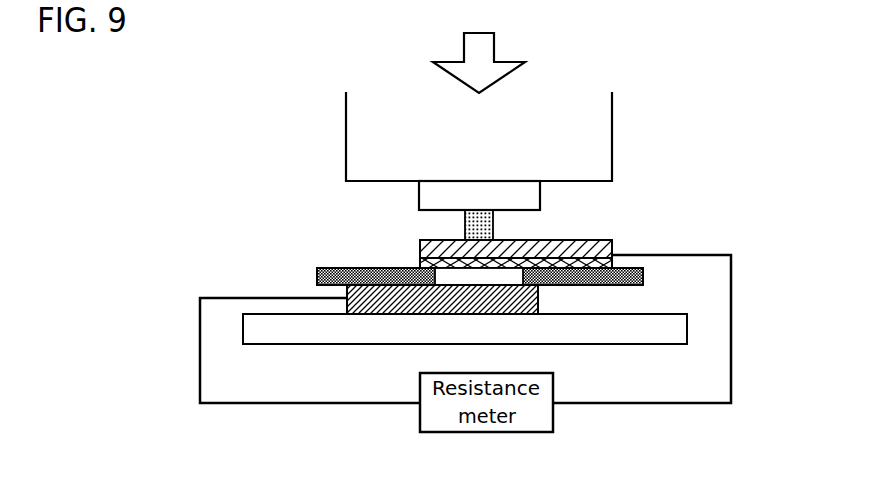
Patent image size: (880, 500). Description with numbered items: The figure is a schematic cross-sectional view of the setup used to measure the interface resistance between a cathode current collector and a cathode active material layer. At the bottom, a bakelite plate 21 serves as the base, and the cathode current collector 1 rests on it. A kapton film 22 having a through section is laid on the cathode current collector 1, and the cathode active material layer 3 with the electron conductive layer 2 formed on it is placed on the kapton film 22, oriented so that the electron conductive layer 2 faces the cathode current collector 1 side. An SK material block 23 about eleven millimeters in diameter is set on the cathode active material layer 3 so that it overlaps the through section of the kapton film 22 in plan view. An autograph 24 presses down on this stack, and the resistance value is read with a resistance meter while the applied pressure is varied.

The autograph 24 is at (612, 135).
The SK material block 23 is at (493, 222).
The cathode active material layer 3 is at (577, 247).
The electron conductive layer 2 is at (606, 262).
The kapton film 22 is at (383, 275).
The cathode current collector 1 is at (363, 314).
The bakelite plate 21 is at (317, 328).